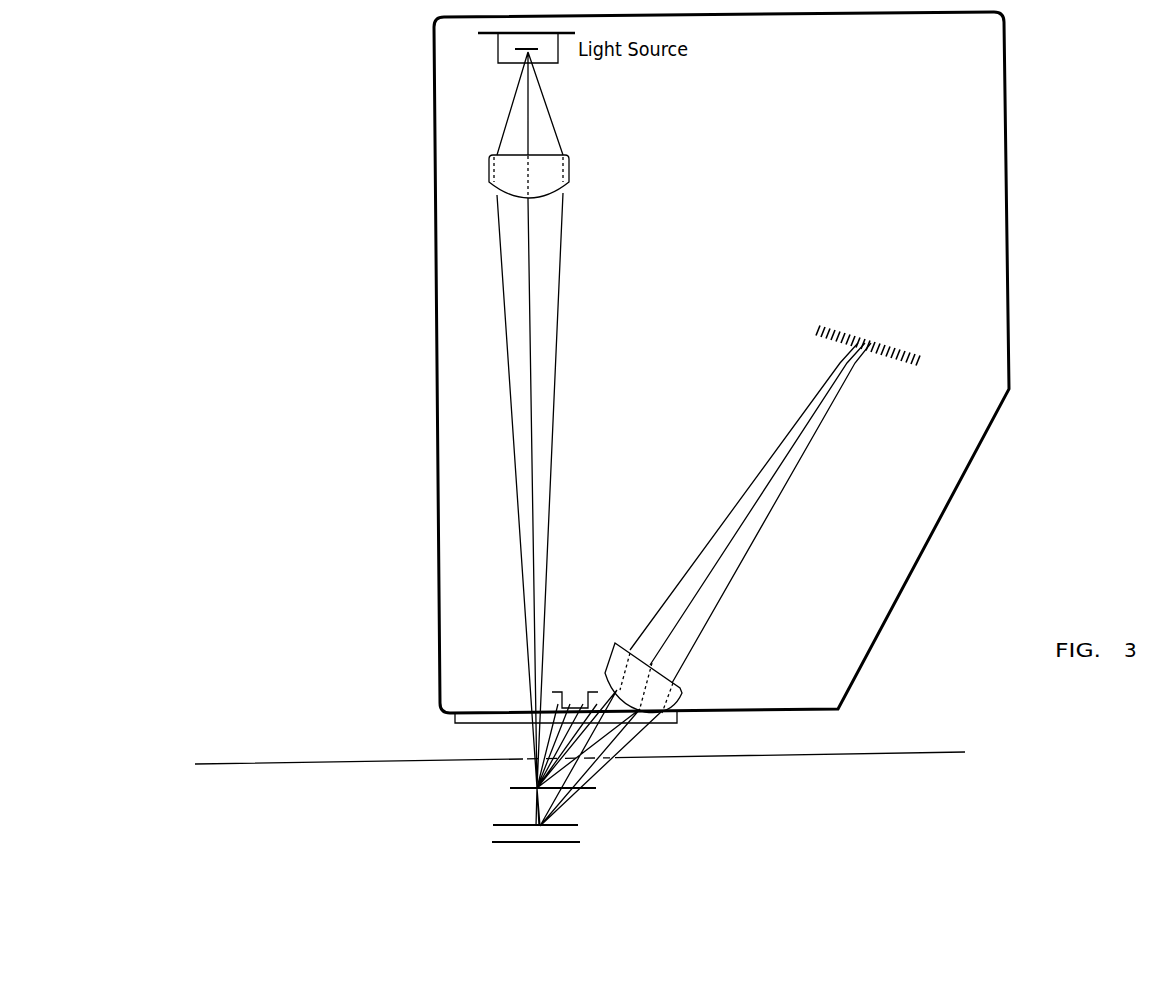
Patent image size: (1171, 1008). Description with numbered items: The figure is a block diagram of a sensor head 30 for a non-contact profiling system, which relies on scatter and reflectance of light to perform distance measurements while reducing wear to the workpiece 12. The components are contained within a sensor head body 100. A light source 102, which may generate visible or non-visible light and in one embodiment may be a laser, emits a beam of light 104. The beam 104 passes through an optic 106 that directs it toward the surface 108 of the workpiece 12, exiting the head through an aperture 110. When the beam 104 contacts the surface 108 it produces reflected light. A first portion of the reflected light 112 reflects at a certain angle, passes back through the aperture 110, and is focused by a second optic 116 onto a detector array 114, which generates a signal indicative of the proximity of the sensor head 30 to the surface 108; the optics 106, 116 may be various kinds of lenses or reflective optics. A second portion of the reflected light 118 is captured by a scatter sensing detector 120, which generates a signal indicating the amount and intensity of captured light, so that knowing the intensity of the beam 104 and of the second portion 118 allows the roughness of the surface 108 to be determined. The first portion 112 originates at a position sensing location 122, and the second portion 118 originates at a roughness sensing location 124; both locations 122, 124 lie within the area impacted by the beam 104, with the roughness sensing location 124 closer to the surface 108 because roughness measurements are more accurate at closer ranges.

The sensor head 30 is at (367, 128).
The sensor head body 100 is at (1010, 176).
The light source 102 is at (550, 57).
The beam of light 104 is at (510, 115).
The optic 106 is at (569, 178).
The surface 108 is at (478, 775).
The aperture 110 is at (478, 712).
The reflected light 112 is at (615, 740).
The detector array 114 is at (905, 342).
The second optic 116 is at (683, 690).
The second portion of the reflected light 118 is at (565, 742).
The scatter sensing detector 120 is at (573, 707).
The position sensing location 122 is at (552, 835).
The roughness sensing location 124 is at (523, 792).
The workpiece 12 is at (955, 793).